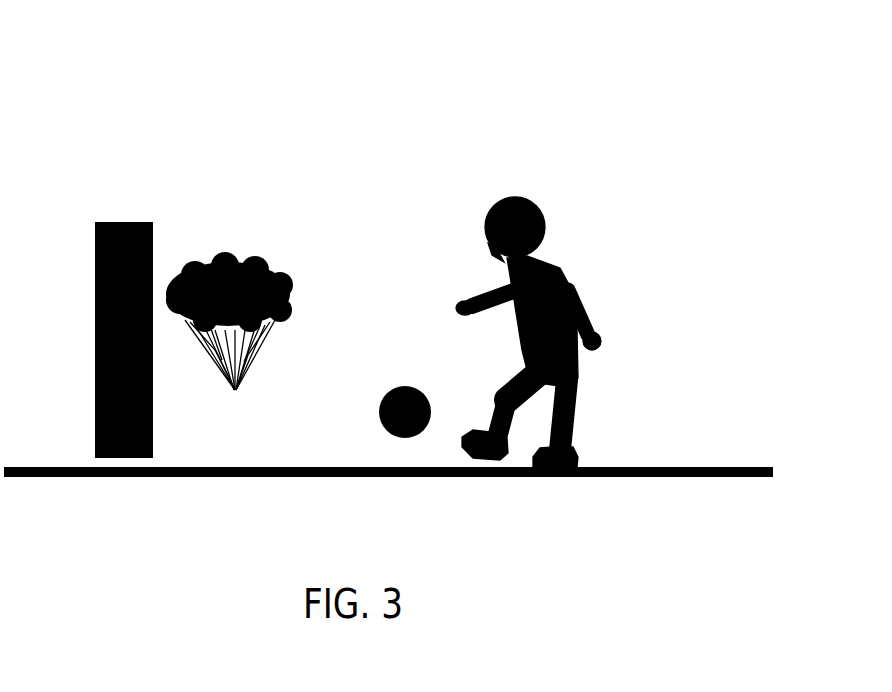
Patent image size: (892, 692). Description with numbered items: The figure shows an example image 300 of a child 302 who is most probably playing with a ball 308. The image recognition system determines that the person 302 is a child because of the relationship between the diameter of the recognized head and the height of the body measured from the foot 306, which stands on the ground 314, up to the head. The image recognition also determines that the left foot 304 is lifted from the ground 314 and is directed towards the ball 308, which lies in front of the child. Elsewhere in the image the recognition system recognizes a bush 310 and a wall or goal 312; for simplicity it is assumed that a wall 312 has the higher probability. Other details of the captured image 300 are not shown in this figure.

The image 300 is at (605, 80).
The child 302 is at (568, 347).
The left foot 304 is at (480, 458).
The foot 306 is at (597, 455).
The ball 308 is at (388, 382).
The bush 310 is at (238, 252).
The wall or goal 312 is at (123, 207).
The ground 314 is at (740, 462).